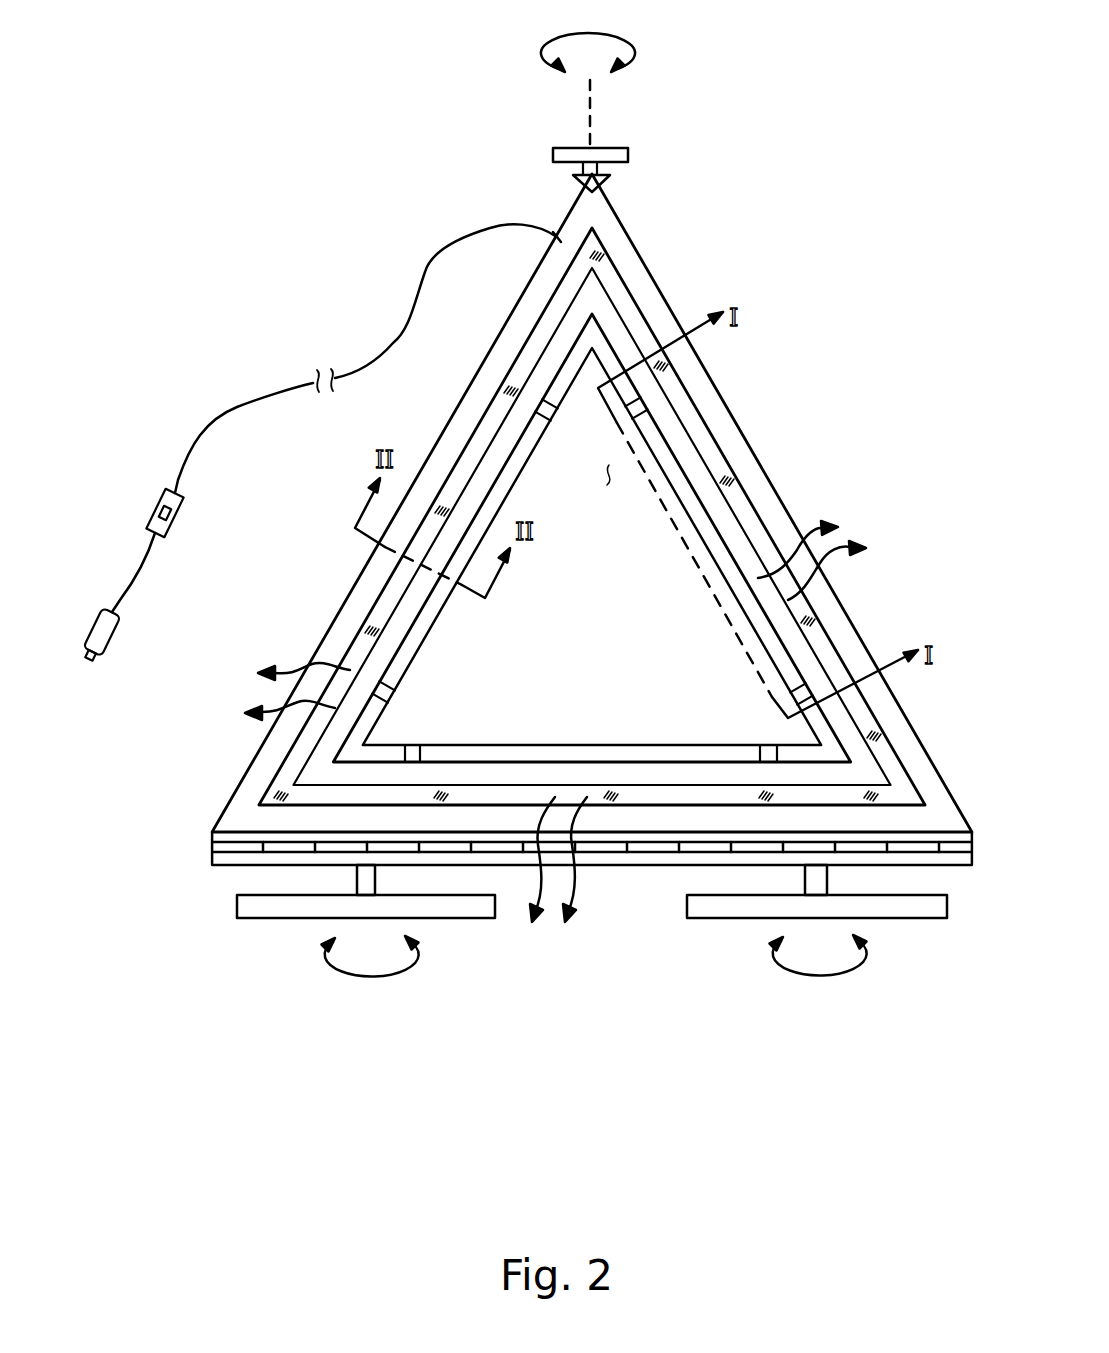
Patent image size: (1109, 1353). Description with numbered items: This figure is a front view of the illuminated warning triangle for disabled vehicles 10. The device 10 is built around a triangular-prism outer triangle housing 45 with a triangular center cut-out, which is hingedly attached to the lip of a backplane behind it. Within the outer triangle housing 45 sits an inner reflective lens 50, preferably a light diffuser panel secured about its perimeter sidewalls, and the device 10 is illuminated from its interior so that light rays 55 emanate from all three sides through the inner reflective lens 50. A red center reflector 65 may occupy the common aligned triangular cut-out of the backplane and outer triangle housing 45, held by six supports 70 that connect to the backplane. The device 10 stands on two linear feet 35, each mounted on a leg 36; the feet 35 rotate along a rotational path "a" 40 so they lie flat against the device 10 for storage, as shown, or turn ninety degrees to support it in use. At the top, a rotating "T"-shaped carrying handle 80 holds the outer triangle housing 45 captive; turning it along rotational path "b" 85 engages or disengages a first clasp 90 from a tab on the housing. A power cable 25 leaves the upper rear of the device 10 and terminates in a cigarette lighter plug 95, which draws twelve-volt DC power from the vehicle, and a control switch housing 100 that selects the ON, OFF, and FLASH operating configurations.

The illuminated warning triangle for disabled vehicles 10 is at (157, 1042).
The power cable 25 is at (423, 257).
The feet 35 is at (467, 900).
The legs 36 is at (367, 883).
The rotational path "a" 40 is at (393, 983).
The outer triangle housing 45 is at (350, 606).
The inner reflective lens 50 is at (477, 428).
The light rays 55 is at (835, 530).
The center reflector 65 is at (605, 475).
The supports 70 is at (540, 405).
The rotating "T"-shaped carrying handle 80 is at (624, 155).
The rotational path "b" 85 is at (635, 50).
The first clasp 90 is at (605, 185).
The cigarette lighter plug 95 is at (102, 647).
The control switch housing 100 is at (175, 508).